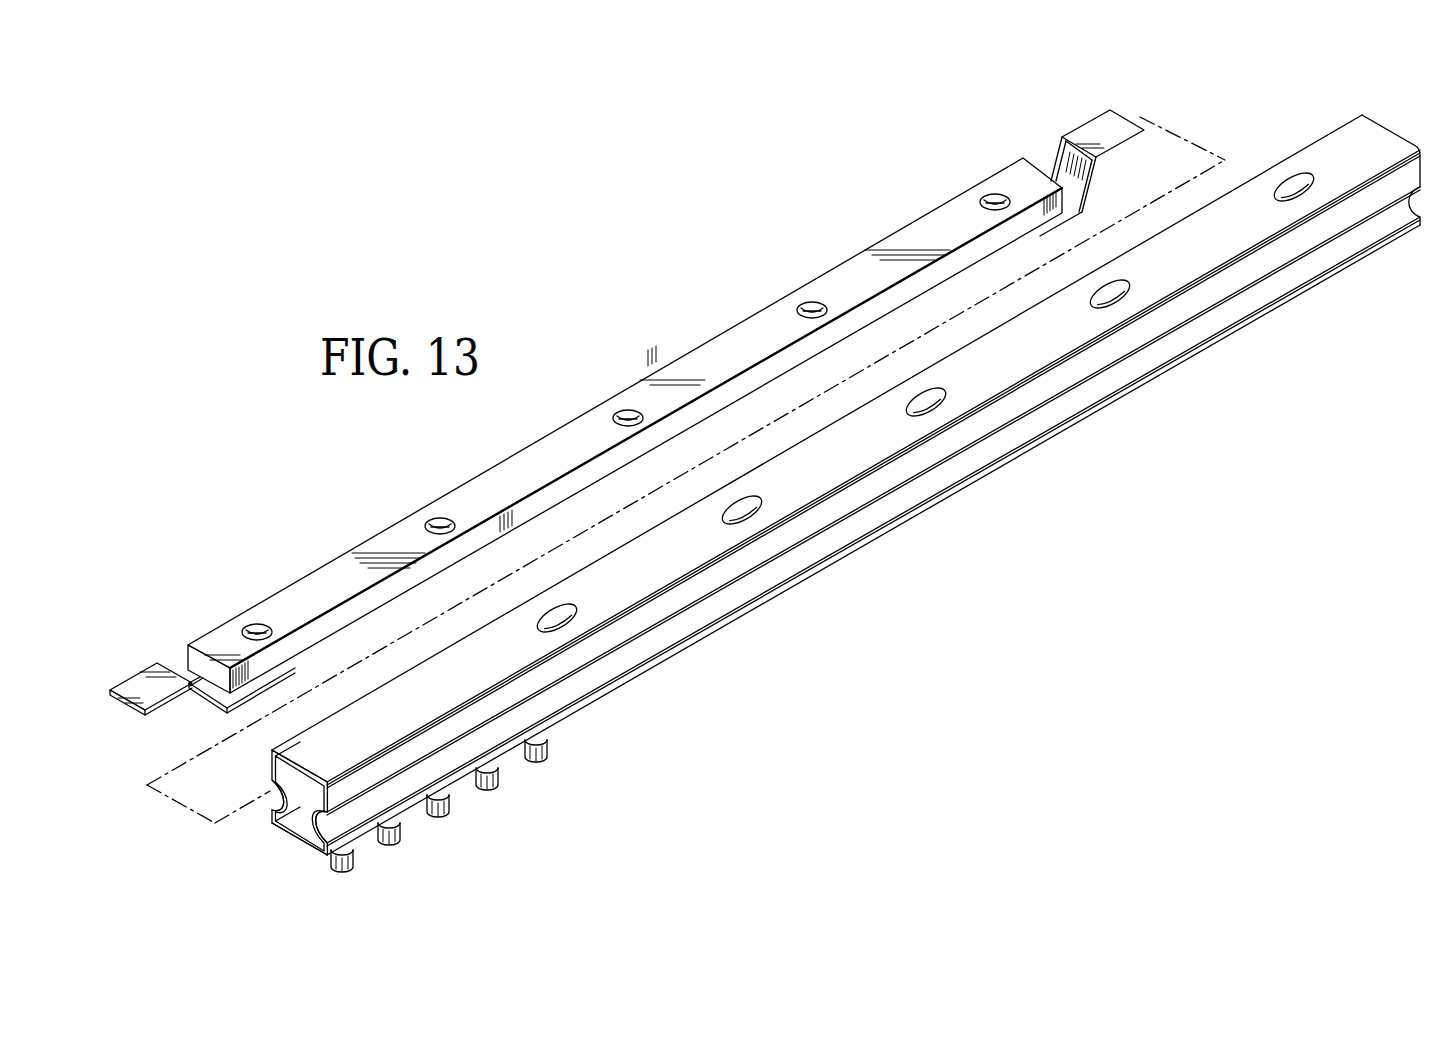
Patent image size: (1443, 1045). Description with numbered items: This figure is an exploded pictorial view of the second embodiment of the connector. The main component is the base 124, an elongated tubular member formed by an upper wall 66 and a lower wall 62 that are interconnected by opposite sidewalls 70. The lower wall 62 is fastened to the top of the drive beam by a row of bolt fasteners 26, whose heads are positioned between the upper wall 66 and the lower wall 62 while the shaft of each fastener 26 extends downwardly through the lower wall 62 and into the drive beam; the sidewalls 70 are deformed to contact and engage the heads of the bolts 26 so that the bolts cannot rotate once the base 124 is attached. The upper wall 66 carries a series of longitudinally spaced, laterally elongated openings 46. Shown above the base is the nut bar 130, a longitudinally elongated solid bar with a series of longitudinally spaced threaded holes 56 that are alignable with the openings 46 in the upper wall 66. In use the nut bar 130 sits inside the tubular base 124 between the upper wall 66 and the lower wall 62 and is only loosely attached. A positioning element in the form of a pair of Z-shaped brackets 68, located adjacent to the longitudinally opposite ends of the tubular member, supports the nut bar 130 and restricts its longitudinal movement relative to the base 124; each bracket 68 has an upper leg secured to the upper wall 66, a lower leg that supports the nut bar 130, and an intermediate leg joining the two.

The base 124 is at (1404, 126).
The nut bar 130 is at (916, 233).
The threaded holes 56 is at (257, 626).
The openings 46 is at (1303, 197).
The brackets 68 is at (125, 688).
The upper wall 66 is at (291, 763).
The sidewalls 70 is at (273, 787).
The lower wall 62 is at (283, 829).
The bolt fasteners 26 is at (388, 856).